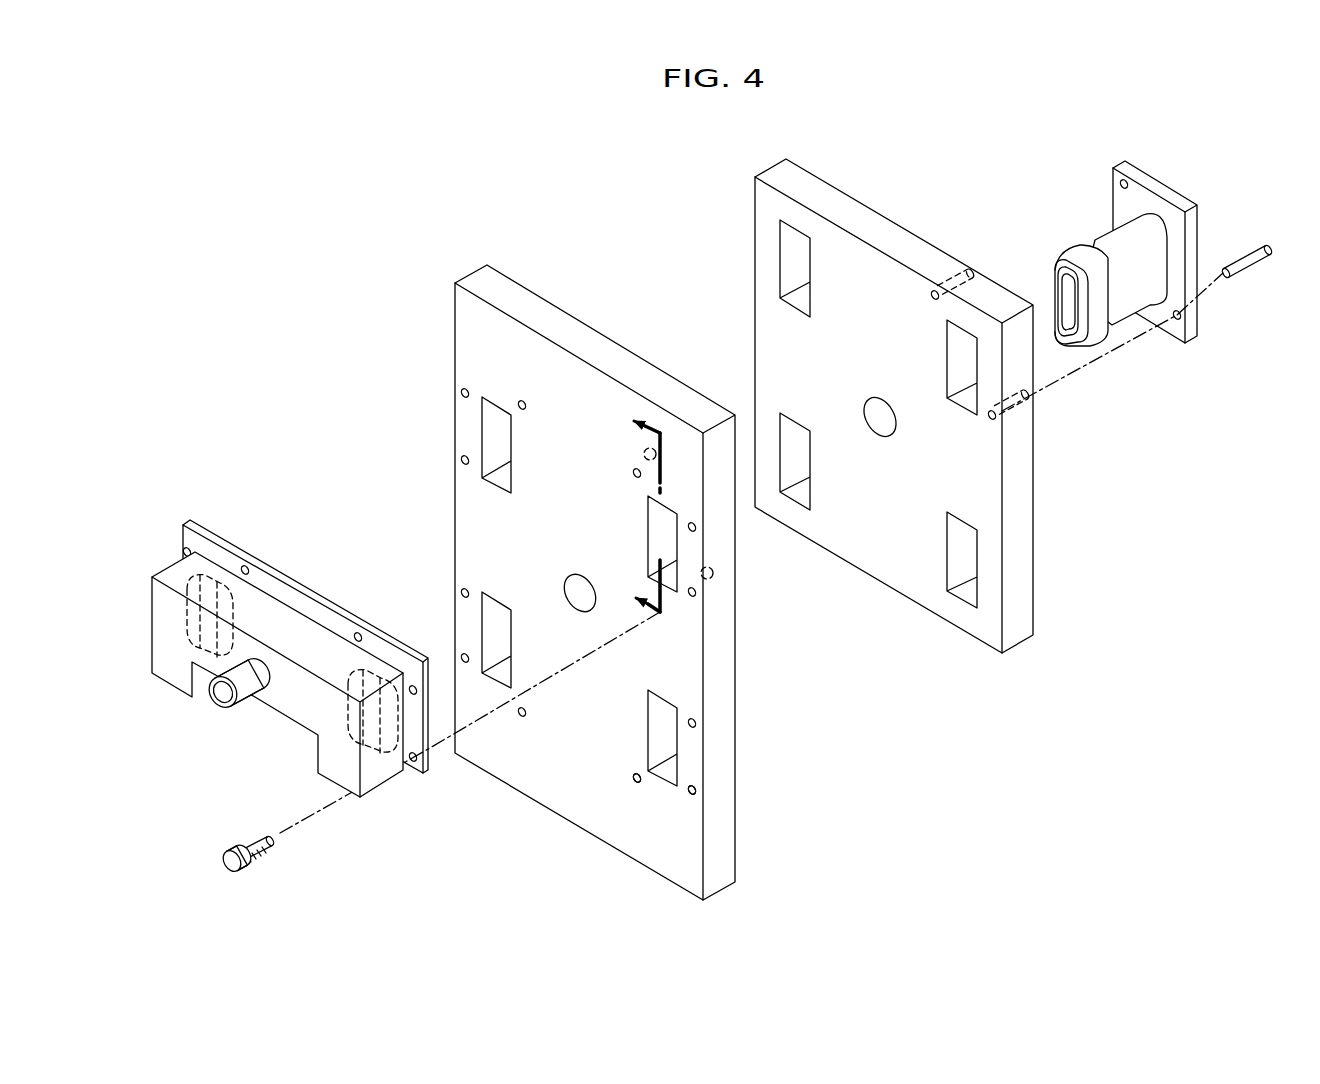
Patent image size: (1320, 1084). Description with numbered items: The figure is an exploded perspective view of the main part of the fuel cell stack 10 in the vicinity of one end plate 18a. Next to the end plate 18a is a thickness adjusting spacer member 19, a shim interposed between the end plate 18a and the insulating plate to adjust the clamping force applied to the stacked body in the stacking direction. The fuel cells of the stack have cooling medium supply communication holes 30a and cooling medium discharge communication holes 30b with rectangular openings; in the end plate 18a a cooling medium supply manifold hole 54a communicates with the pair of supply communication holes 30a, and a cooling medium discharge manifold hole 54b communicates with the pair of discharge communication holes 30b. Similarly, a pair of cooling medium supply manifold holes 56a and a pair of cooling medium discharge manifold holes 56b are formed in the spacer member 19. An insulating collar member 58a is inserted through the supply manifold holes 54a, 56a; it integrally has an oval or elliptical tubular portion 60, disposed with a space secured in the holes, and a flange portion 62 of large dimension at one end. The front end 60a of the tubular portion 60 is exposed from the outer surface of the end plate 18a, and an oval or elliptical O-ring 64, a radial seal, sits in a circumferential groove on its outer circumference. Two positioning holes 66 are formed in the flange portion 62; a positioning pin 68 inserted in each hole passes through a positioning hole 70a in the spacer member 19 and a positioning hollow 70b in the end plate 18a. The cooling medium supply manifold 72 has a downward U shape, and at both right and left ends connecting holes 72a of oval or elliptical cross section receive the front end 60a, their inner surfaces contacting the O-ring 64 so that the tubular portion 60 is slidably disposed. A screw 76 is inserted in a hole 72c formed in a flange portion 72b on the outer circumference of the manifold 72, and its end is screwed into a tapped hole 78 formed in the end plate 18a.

The fuel cell stack 10 is at (650, 145).
The end plate 18a is at (452, 326).
The thickness adjusting spacer member 19 is at (752, 220).
The cooling medium supply communication holes 30a is at (655, 537).
The cooling medium discharge communication holes 30b is at (658, 732).
The cooling medium supply manifold hole 54a is at (490, 424).
The cooling medium discharge manifold hole 54b is at (500, 668).
The cooling medium supply manifold hole 56a is at (795, 266).
The cooling medium discharge manifold hole 56b is at (797, 432).
The insulating collar member 58a is at (1157, 178).
The tubular portion 60 is at (1100, 243).
The front end 60a is at (1091, 322).
The flange portion 62 is at (1197, 222).
The O-ring 64 is at (1106, 312).
The positioning holes 66 is at (1120, 185).
The positioning pin 68 is at (1256, 260).
The positioning hole 70a is at (932, 297).
The positioning hollow 70b is at (645, 452).
The cooling medium supply manifold 72 is at (172, 556).
The connecting holes 72a is at (187, 655).
The flange portion 72b is at (283, 592).
The hole 72c is at (358, 631).
The screw 76 is at (248, 845).
The tapped hole 78 is at (692, 792).